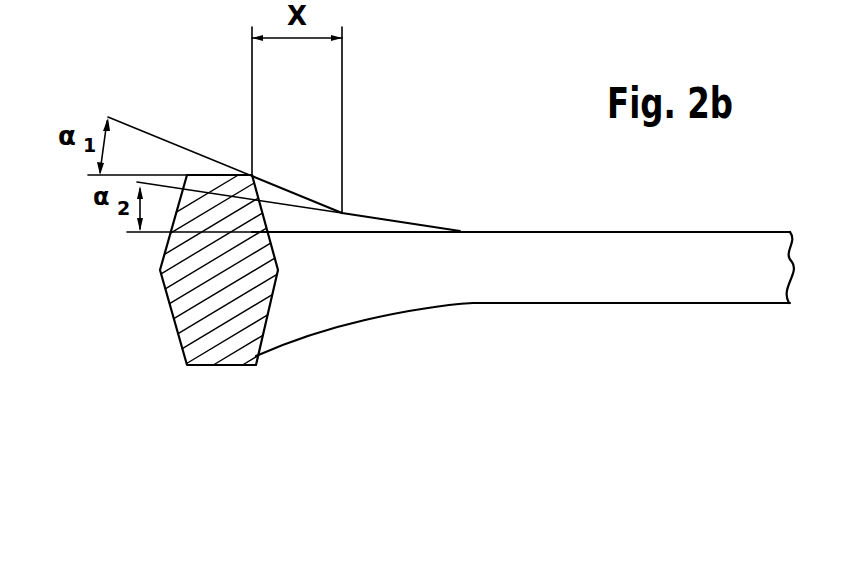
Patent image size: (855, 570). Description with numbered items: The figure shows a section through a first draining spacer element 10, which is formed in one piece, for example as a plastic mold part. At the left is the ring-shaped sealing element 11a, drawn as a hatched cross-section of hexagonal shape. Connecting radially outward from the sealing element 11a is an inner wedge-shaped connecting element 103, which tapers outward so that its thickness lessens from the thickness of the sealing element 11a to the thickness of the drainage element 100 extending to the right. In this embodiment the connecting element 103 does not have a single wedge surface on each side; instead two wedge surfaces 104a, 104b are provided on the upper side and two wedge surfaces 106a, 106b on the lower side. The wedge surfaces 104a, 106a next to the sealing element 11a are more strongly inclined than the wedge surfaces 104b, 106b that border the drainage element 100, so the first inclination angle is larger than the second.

The first draining spacer element 10 is at (560, 385).
The ring-shaped sealing element 11a is at (212, 345).
The drainage element 100 is at (714, 292).
The inner wedge-shaped connecting element 103 is at (348, 280).
The upper wedge surface 104a is at (292, 191).
The upper wedge surface 104b is at (411, 223).
The lower wedge surface 106a is at (287, 350).
The lower wedge surface 106b is at (392, 317).